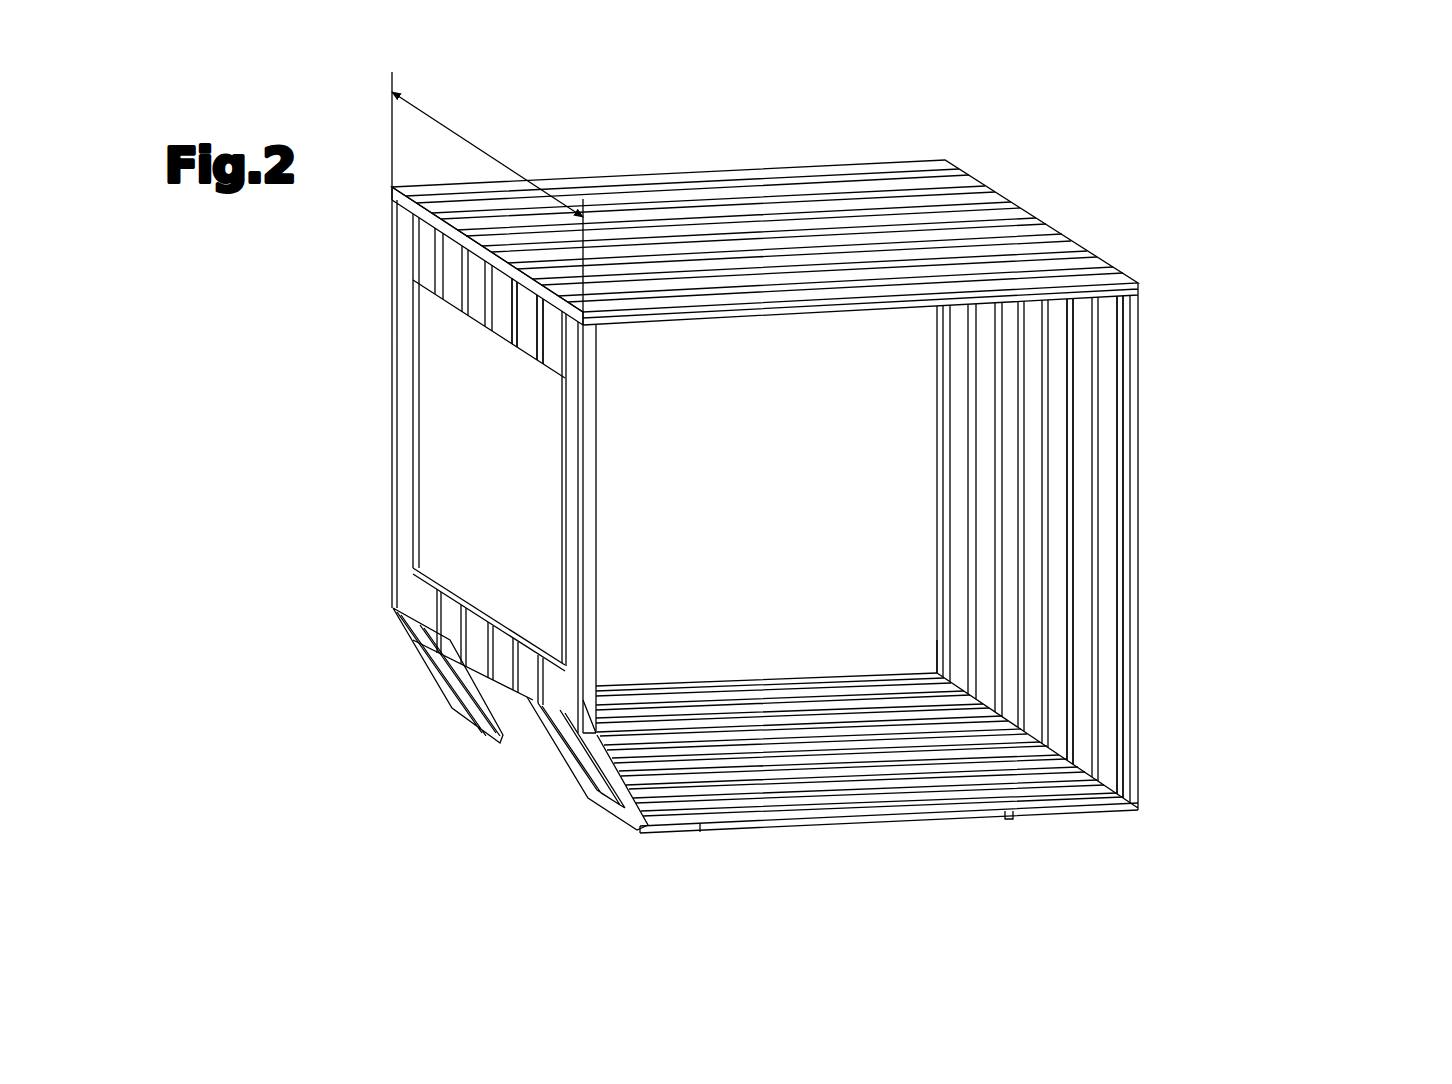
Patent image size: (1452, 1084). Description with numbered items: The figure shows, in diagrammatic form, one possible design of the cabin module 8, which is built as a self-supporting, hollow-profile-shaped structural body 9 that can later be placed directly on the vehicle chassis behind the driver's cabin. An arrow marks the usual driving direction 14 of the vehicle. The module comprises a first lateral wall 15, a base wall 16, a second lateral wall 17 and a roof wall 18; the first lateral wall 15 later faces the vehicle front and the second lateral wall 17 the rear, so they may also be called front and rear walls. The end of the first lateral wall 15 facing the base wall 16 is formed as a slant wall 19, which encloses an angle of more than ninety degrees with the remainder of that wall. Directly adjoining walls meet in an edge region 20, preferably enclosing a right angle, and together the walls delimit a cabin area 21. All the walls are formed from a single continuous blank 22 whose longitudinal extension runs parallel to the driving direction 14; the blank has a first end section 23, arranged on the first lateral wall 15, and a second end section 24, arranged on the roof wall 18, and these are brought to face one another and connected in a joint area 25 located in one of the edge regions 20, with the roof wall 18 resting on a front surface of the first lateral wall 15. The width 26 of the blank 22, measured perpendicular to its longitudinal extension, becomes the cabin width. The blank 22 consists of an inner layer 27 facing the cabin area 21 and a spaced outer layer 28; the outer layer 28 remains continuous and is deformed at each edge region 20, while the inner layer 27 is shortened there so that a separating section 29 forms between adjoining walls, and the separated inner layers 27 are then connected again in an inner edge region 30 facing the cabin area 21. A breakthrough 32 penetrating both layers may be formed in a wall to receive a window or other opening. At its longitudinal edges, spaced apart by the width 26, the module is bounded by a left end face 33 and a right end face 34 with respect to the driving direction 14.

The cabin module 8 is at (1320, 165).
The self-supporting structural body 9 is at (1162, 192).
The driving direction 14 is at (172, 362).
The first lateral wall 15 is at (373, 563).
The base wall 16 is at (816, 722).
The second lateral wall 17 is at (960, 490).
The roof wall 18 is at (990, 190).
The slant wall 19 is at (557, 790).
The edge region 20 is at (1175, 280).
The cabin area 21 is at (635, 545).
The blank 22 is at (1170, 545).
The first end section 23 is at (392, 220).
The second end section 24 is at (537, 294).
The joint area 25 is at (392, 200).
The width 26 is at (490, 158).
The inner layer 27 is at (1065, 433).
The outer layer 28 is at (458, 621).
The separating section 29 is at (600, 730).
The inner edge region 30 is at (1097, 320).
The breakthrough 32 is at (535, 330).
The left end face 33 is at (1185, 612).
The right end face 34 is at (905, 393).